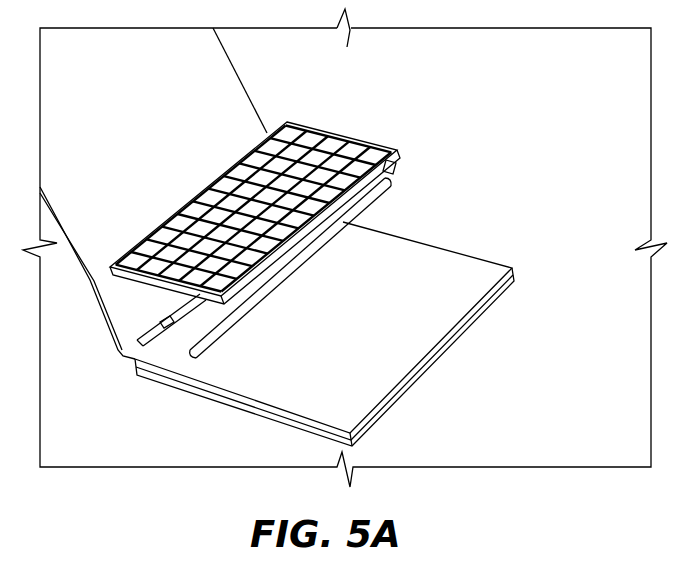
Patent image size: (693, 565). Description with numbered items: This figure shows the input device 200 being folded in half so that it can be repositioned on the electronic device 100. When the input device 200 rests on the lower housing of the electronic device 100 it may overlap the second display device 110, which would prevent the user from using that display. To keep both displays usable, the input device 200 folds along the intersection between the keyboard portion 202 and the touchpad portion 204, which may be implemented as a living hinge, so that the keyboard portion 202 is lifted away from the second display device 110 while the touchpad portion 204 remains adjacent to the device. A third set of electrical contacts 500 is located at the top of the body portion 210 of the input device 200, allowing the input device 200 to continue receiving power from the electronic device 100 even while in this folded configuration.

The electronic device 100 is at (277, 79).
The second display device 110 is at (382, 319).
The input device 200 is at (429, 132).
The keyboard portion 202 is at (327, 117).
The touchpad portion 204 is at (177, 341).
The body portion 210 is at (390, 184).
The third set of electrical contacts 500 is at (398, 167).